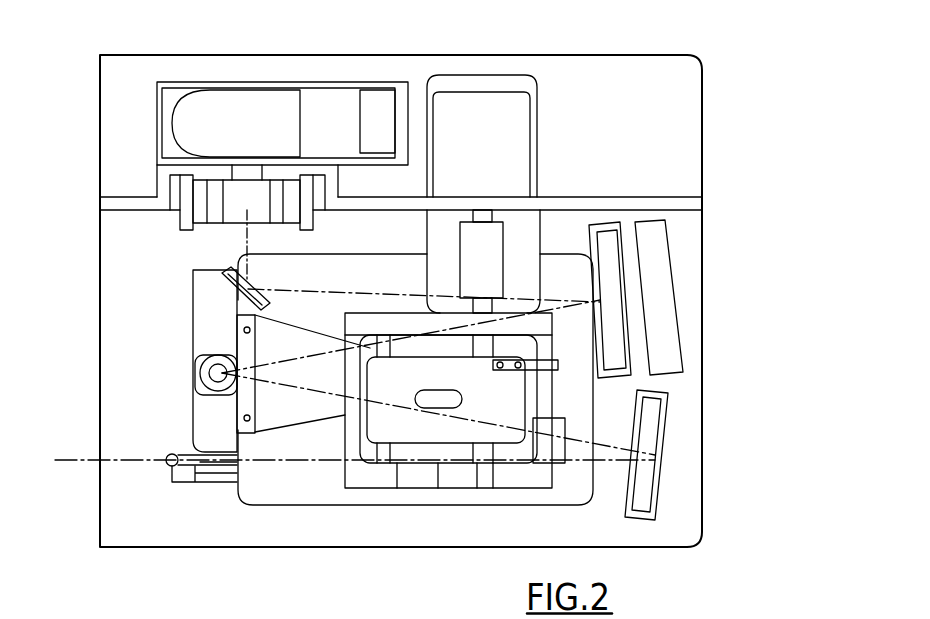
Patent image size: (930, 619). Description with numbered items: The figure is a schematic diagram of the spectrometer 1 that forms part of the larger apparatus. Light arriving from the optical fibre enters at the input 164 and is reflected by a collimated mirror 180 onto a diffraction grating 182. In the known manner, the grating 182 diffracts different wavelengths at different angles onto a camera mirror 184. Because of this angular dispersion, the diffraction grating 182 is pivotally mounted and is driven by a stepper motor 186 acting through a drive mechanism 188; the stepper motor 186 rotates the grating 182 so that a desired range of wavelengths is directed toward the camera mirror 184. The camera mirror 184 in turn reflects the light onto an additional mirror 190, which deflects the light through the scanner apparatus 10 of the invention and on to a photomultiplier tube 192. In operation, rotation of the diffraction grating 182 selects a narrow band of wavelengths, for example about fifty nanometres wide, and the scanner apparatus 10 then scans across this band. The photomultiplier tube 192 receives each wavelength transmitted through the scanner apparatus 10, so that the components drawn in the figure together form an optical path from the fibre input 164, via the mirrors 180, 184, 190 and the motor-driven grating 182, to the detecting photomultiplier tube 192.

The spectrometer 1 is at (720, 83).
The scanner apparatus 10 is at (187, 191).
The input from the optical fibre 164 is at (167, 466).
The collimated mirror 180 is at (640, 456).
The diffraction grating 182 is at (207, 327).
The camera mirror 184 is at (598, 305).
The stepper motor 186 is at (503, 107).
The drive mechanism 188 is at (432, 433).
The additional mirror 190 is at (236, 272).
The photomultiplier tube 192 is at (263, 107).